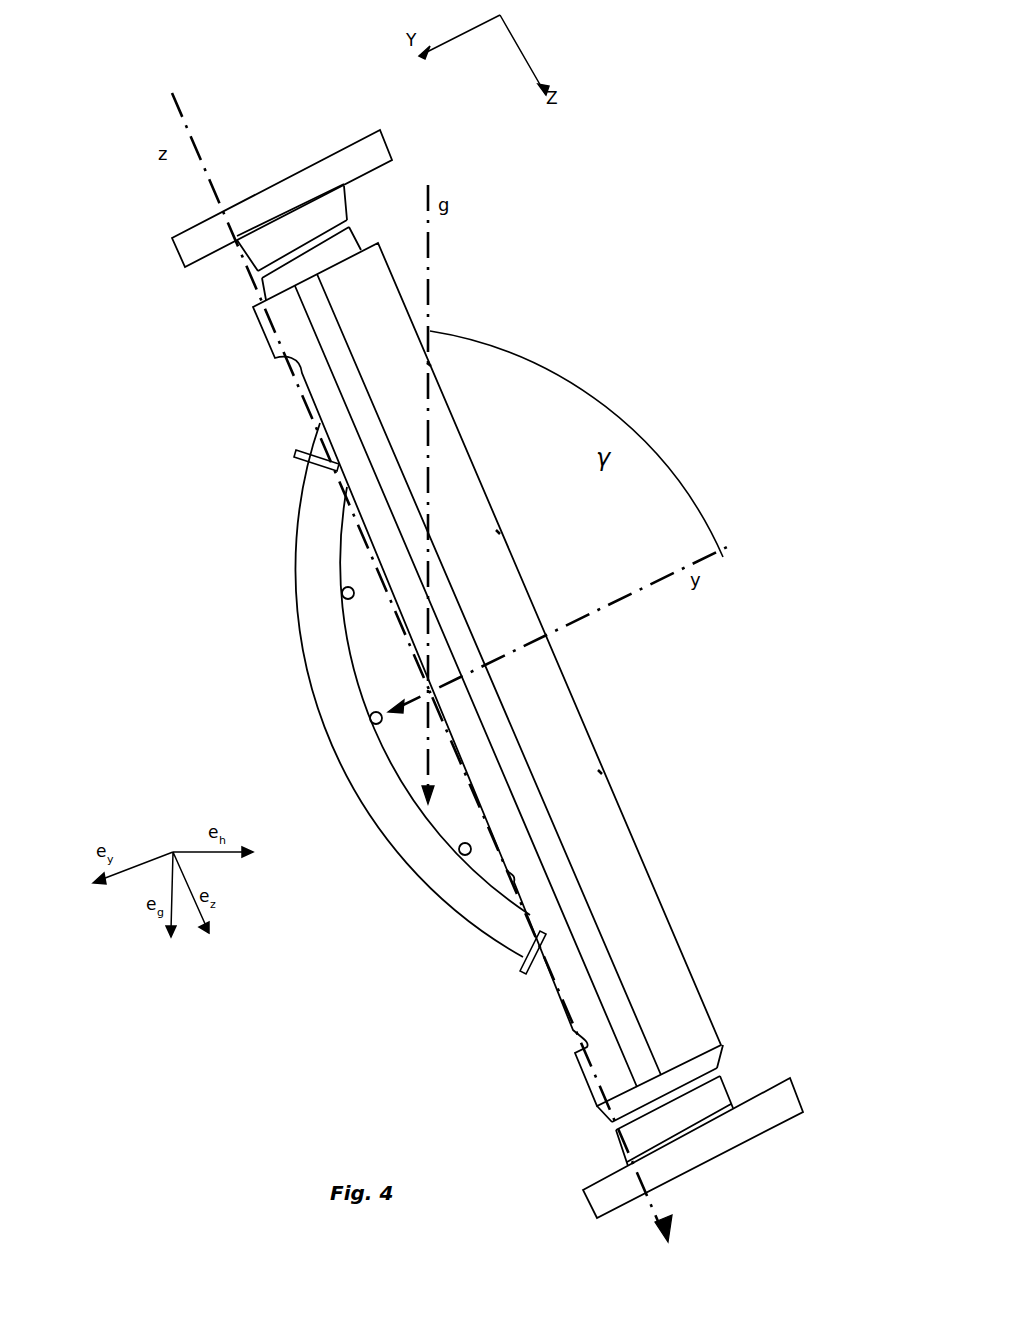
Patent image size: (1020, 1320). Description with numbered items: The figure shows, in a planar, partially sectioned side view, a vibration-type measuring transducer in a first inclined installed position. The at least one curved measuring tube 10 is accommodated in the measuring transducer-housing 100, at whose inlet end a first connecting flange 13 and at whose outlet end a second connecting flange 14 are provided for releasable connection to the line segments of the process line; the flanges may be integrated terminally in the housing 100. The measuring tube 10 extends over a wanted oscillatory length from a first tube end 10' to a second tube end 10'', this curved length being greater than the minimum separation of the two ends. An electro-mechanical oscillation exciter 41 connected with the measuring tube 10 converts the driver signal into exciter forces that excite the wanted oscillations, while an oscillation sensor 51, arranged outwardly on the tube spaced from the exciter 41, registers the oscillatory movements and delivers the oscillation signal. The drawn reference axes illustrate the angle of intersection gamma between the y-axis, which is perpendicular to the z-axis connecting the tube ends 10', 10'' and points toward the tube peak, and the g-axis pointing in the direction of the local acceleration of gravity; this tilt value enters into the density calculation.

The first connecting flange 13 is at (196, 243).
The second connecting flange 14 is at (612, 1188).
The measuring transducer-housing 100 is at (608, 821).
The measuring tube 10 is at (364, 690).
The first tube end 10' is at (252, 461).
The second tube end 10'' is at (471, 964).
The oscillation sensor 51 is at (341, 592).
The oscillation exciter 41 is at (370, 716).